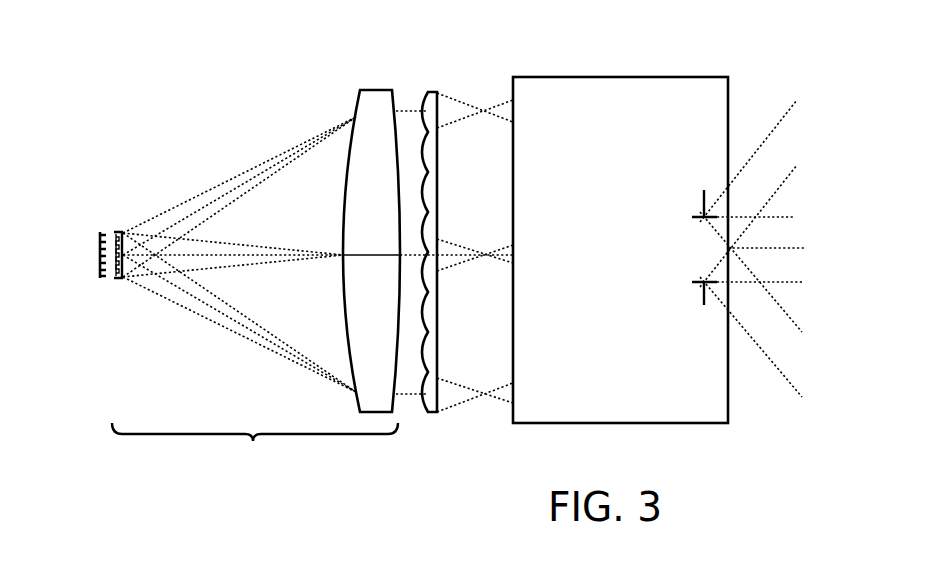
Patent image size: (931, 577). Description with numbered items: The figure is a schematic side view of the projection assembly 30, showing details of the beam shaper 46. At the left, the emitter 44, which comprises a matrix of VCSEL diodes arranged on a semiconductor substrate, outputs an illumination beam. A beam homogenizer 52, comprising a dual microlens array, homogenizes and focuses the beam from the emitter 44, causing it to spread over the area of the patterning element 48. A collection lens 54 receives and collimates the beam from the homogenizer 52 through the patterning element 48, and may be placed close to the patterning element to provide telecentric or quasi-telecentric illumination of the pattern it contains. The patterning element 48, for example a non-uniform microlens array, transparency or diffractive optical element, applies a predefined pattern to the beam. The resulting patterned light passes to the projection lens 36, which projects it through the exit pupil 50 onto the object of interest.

The projection assembly 30 is at (122, 77).
The emitter 44 is at (98, 269).
The beam homogenizer 52 is at (113, 232).
The collection lens 54 is at (379, 90).
The patterning element 48 is at (430, 92).
The projection lens 36 is at (622, 77).
The exit pupil 50 is at (694, 217).
The beam shaper 46 is at (255, 449).